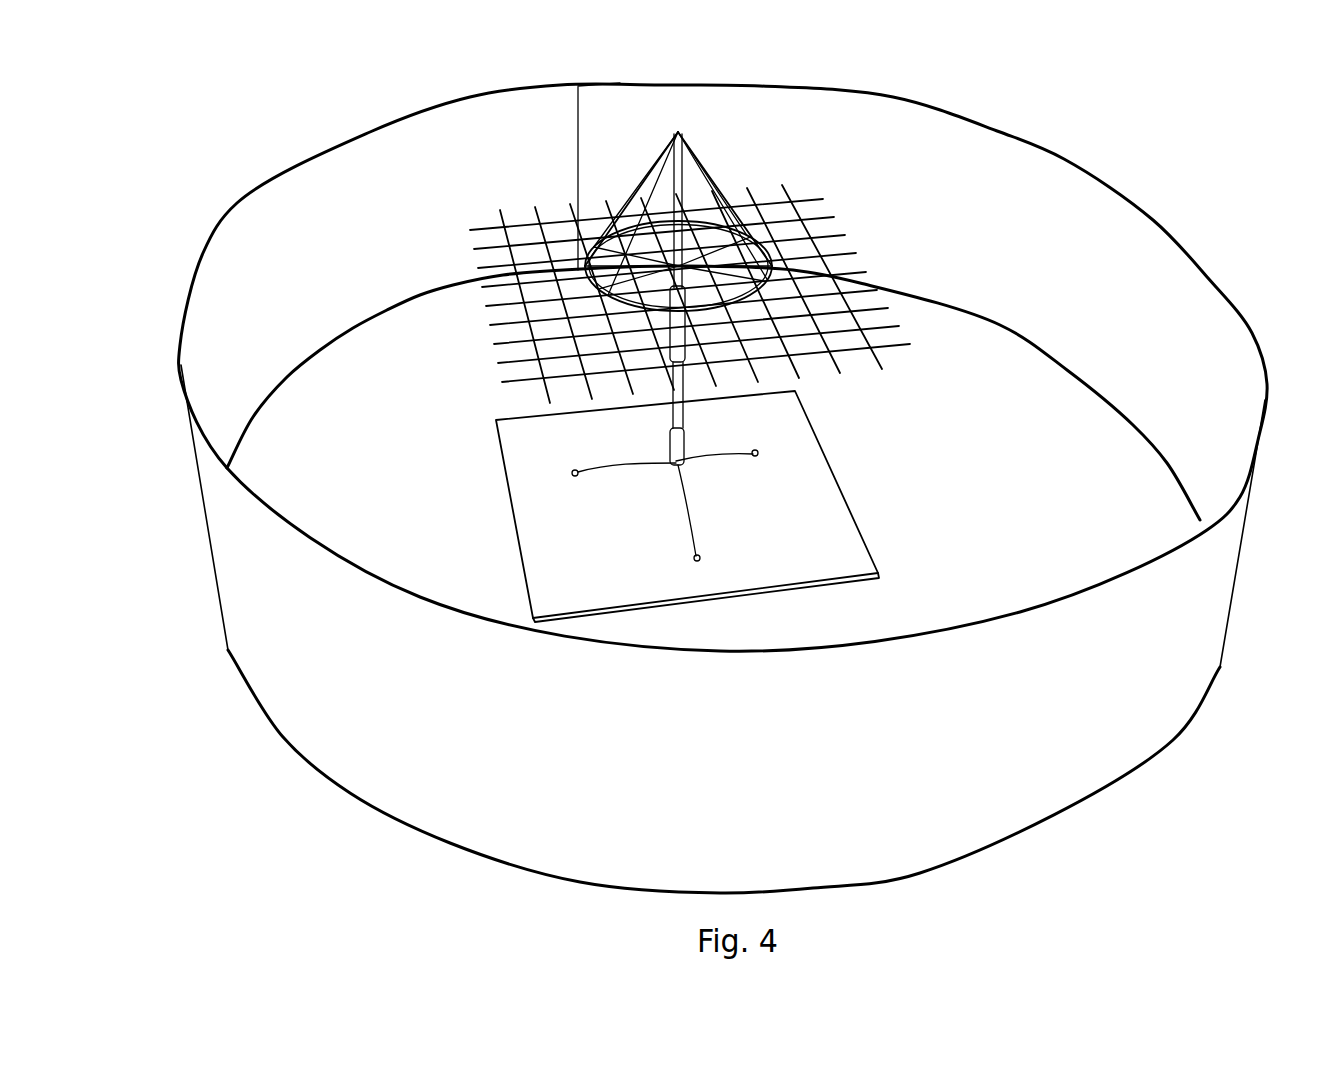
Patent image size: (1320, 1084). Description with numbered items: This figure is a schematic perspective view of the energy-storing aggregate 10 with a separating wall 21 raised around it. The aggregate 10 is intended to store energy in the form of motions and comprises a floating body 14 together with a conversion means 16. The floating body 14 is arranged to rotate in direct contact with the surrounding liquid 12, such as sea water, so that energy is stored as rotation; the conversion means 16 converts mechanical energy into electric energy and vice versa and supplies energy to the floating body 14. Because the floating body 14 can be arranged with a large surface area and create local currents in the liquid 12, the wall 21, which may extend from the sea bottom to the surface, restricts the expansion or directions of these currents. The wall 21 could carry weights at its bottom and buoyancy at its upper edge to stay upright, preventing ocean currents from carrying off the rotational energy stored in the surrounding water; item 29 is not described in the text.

The aggregate 10 is at (739, 331).
The surrounding liquid 12 is at (947, 355).
The floating body 14 is at (831, 294).
The conversion means 16 is at (727, 506).
The wall 21 is at (700, 488).
The conical spreader 29 is at (695, 175).